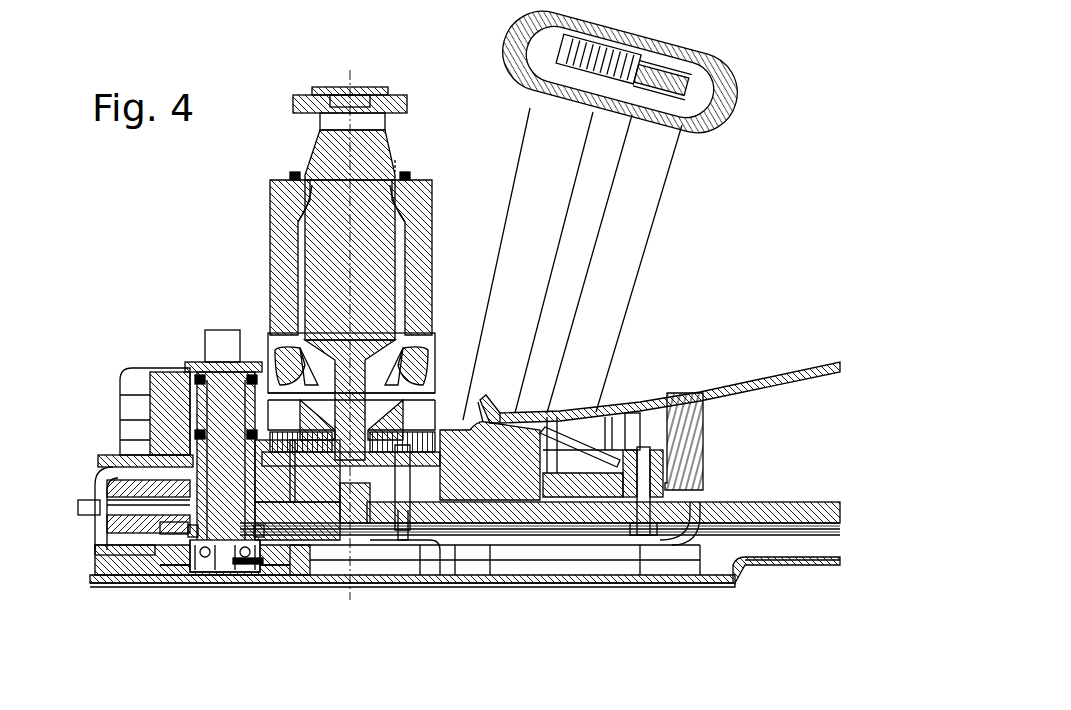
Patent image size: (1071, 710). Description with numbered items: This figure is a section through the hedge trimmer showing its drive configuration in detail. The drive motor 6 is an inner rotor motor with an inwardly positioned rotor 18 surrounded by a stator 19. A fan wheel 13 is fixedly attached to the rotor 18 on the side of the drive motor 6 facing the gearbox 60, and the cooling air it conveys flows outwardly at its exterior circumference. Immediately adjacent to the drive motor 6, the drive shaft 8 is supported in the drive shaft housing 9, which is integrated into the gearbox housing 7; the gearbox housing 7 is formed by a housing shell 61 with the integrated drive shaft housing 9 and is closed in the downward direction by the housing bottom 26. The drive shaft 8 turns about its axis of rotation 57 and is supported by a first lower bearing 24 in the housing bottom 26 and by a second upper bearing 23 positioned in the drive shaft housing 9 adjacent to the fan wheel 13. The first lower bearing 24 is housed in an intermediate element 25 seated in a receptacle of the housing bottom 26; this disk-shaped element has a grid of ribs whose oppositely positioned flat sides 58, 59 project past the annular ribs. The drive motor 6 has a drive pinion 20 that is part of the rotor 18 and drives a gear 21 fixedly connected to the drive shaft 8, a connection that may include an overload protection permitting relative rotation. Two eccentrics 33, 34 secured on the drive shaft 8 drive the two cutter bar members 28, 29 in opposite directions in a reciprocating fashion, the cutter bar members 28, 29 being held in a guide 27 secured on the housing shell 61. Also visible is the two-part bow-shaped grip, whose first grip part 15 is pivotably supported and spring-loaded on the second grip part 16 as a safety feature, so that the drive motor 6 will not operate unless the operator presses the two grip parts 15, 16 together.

The drive motor 6 is at (423, 150).
The gearbox housing 7 is at (100, 433).
The drive shaft 8 is at (207, 411).
The drive shaft housing 9 is at (184, 361).
The fan wheel 13 is at (395, 423).
The first grip part 15 is at (540, 98).
The second grip part 16 is at (663, 157).
The rotor 18 is at (381, 265).
The stator 19 is at (283, 252).
The drive pinion 20 is at (350, 500).
The gear 21 is at (97, 489).
The second upper bearing 23 is at (240, 358).
The first lower bearing 24 is at (248, 562).
The intermediate element 25 is at (175, 572).
The housing bottom 26 is at (437, 583).
The guide 27 is at (753, 513).
The cutter bar member 28 is at (770, 528).
The cutter bar member 29 is at (733, 530).
The eccentric 33 is at (250, 540).
The eccentric 34 is at (203, 573).
The axis of rotation 57 is at (222, 370).
The flat side 58 is at (160, 530).
The flat side 59 is at (177, 560).
The gearbox 60 is at (152, 530).
The housing shell 61 is at (108, 486).